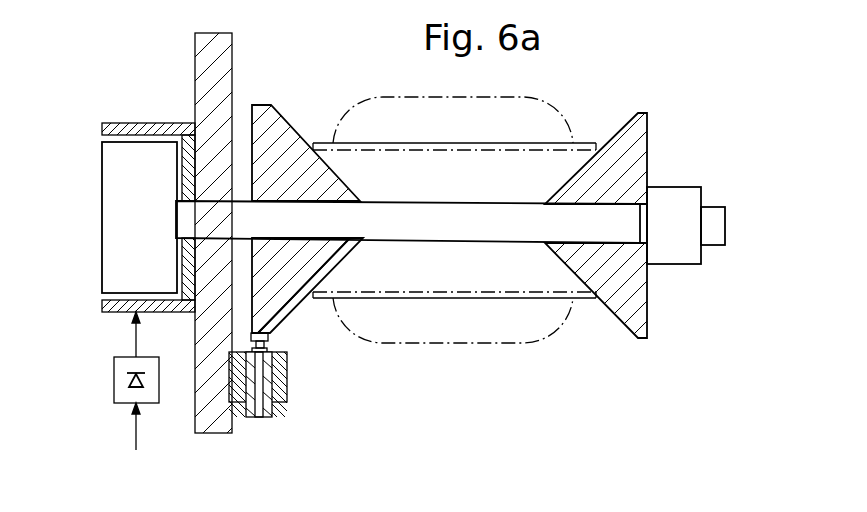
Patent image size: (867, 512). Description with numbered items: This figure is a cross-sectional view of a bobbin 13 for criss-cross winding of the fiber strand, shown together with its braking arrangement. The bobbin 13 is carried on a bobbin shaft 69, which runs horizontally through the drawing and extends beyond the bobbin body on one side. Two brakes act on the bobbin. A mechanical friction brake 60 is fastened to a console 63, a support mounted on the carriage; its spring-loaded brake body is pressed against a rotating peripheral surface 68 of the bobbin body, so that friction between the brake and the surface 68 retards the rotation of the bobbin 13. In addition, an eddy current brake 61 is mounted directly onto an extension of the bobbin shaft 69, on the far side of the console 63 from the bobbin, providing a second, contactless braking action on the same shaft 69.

The bobbin 13 is at (493, 275).
The mechanical friction brake 60 is at (287, 379).
The eddy current brake 61 is at (150, 152).
The console 63 is at (222, 90).
The rotating peripheral surface 68 is at (263, 105).
The bobbin shaft 69 is at (461, 222).